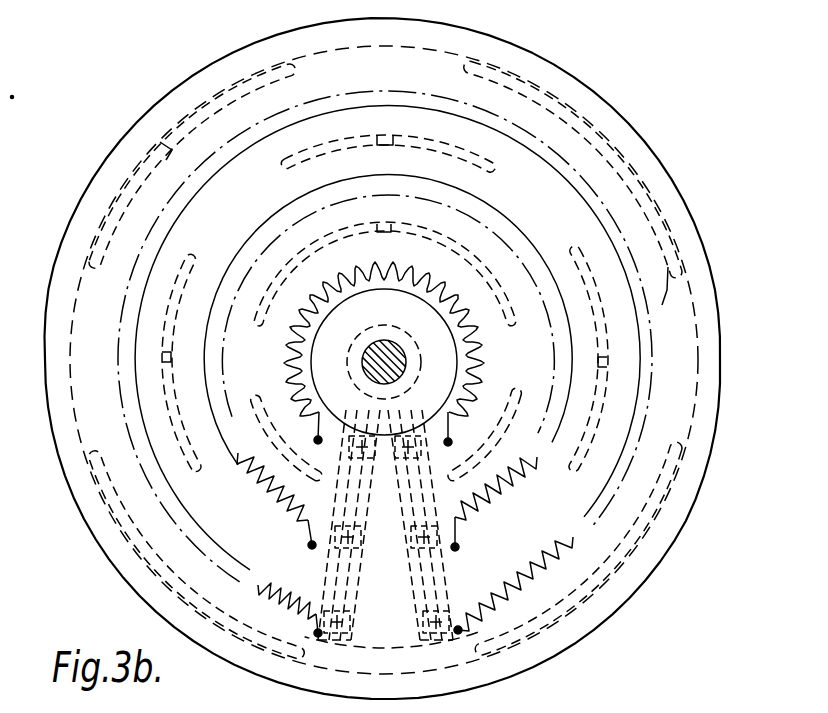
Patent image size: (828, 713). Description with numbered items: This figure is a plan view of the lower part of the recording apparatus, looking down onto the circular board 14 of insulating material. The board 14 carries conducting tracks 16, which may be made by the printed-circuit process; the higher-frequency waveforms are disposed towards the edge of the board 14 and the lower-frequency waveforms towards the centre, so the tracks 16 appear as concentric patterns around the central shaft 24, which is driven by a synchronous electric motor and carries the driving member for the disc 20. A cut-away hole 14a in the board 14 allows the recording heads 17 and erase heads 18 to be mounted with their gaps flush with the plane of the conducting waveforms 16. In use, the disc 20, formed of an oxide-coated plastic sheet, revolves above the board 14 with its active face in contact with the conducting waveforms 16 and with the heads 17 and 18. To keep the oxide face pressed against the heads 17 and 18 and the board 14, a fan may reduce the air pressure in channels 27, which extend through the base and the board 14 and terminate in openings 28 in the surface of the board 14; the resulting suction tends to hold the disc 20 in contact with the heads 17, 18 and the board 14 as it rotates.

The circular board 14 is at (678, 548).
The cut-away hole 14a is at (330, 577).
The conducting tracks 16 is at (470, 356).
The recording heads 17 is at (352, 455).
The erase heads 18 is at (345, 455).
The disc 20 is at (690, 483).
The shaft 24 is at (398, 362).
The channels 27 is at (600, 364).
The openings 28 is at (300, 252).